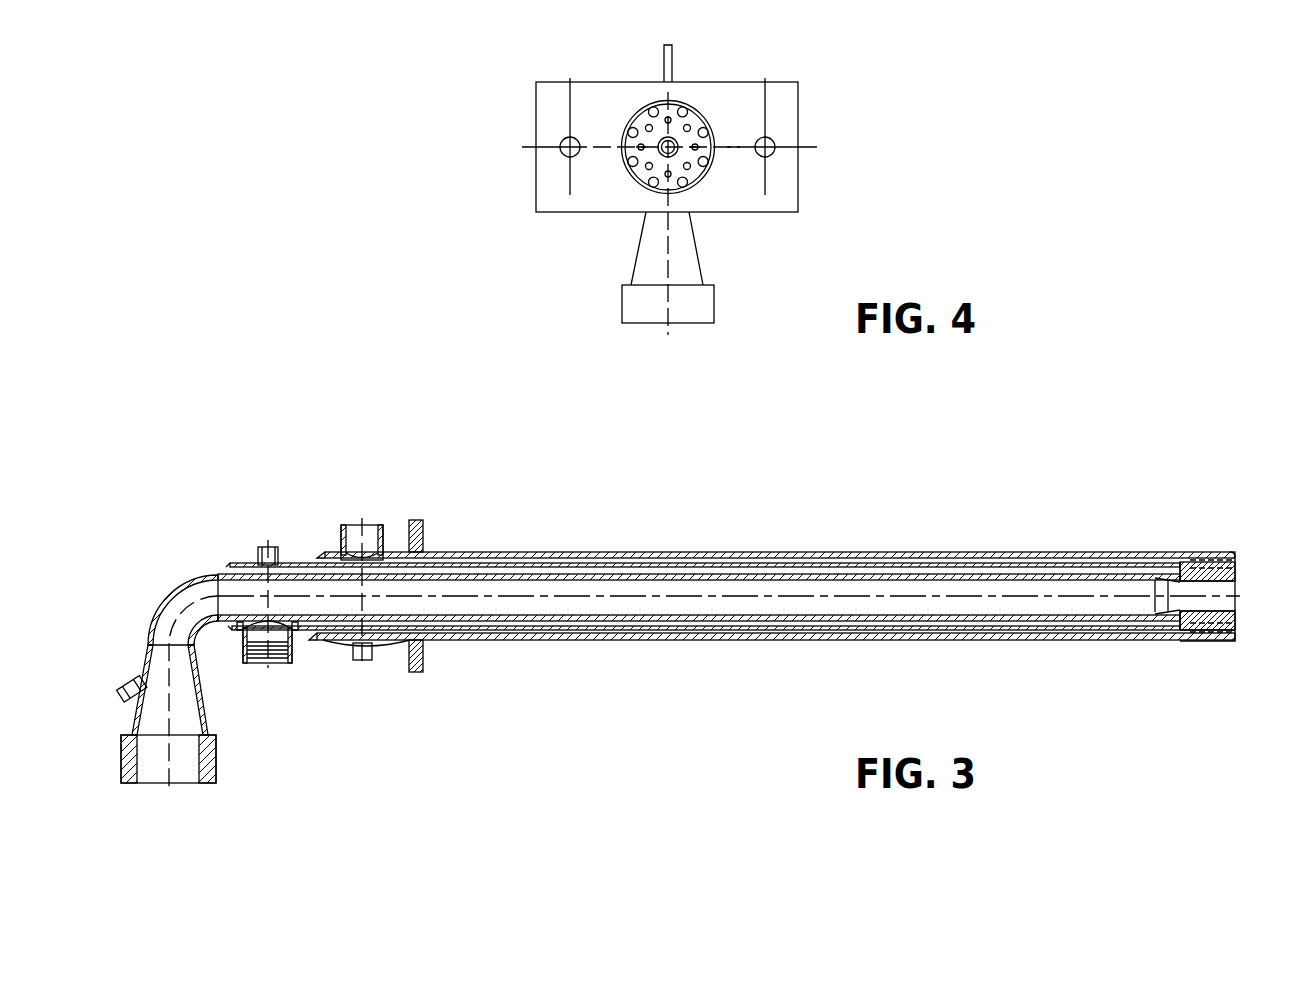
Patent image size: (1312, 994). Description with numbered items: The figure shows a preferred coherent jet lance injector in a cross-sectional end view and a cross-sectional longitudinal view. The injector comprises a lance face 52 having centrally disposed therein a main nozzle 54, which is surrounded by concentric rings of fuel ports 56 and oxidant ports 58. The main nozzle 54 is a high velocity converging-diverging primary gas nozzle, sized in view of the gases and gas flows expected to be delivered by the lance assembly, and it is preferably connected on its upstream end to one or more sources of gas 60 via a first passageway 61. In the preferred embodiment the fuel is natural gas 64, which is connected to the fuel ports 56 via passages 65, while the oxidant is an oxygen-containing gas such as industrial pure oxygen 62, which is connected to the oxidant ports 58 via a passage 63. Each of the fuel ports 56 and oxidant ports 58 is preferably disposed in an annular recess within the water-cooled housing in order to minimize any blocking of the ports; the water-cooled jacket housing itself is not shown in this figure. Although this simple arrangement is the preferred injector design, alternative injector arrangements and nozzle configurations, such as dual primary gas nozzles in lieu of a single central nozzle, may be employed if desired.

In FIG. 4, the lance face 52 is at (614, 194).
In FIG. 3, the lance face 52 is at (1264, 552).
In FIG. 4, the main nozzle 54 is at (677, 141).
In FIG. 3, the main nozzle 54 is at (1227, 588).
In FIG. 4, the fuel ports 56 is at (688, 167).
In FIG. 3, the fuel ports 56 is at (1237, 622).
In FIG. 4, the oxidant ports 58 is at (651, 111).
In FIG. 3, the oxidant ports 58 is at (1237, 555).
In FIG. 4, the sources of gas 60 is at (678, 343).
In FIG. 3, the sources of gas 60 is at (169, 801).
In FIG. 3, the first passageway 61 is at (517, 593).
In FIG. 3, the industrial pure oxygen 62 is at (355, 511).
In FIG. 3, the passage 63 is at (677, 562).
In FIG. 3, the natural gas 64 is at (267, 685).
In FIG. 3, the passages 65 is at (570, 622).